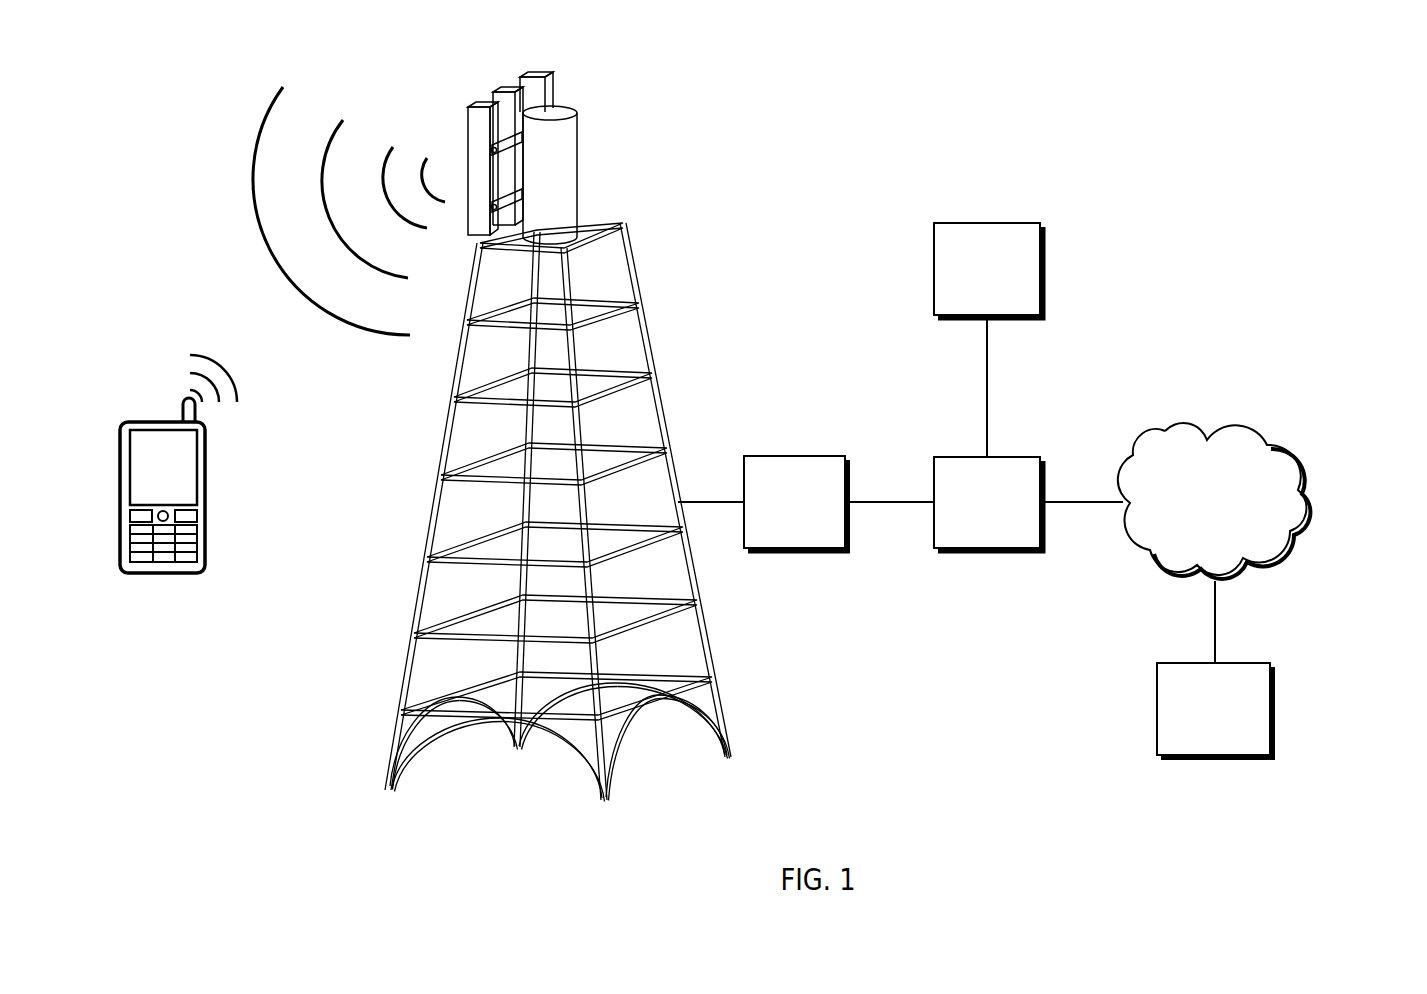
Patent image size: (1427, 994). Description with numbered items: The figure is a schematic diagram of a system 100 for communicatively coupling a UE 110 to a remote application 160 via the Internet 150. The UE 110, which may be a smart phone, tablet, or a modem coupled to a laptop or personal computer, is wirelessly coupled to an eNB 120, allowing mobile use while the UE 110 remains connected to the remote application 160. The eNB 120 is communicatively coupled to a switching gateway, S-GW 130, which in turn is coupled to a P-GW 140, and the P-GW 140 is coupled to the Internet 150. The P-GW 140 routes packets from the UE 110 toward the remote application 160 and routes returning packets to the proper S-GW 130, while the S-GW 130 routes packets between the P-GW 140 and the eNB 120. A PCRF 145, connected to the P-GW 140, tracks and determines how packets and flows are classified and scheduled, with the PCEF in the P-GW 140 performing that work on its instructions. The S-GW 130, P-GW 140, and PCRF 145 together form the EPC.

The system 100 is at (1316, 82).
The UE 110 is at (205, 467).
The eNB 120 is at (580, 128).
The switching gateway (S-GW) 130 is at (843, 456).
The P-GW 140 is at (1040, 457).
The PCRF 145 is at (1040, 223).
The Internet 150 is at (1288, 446).
The remote application 160 is at (1267, 663).